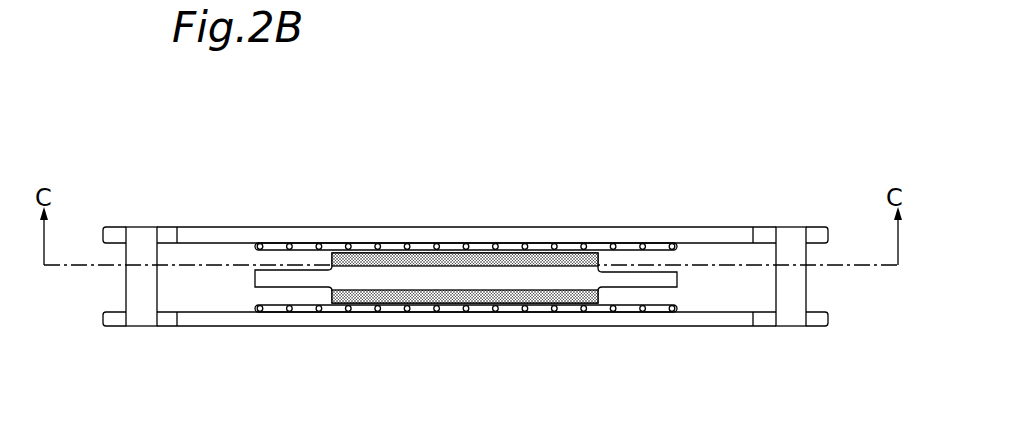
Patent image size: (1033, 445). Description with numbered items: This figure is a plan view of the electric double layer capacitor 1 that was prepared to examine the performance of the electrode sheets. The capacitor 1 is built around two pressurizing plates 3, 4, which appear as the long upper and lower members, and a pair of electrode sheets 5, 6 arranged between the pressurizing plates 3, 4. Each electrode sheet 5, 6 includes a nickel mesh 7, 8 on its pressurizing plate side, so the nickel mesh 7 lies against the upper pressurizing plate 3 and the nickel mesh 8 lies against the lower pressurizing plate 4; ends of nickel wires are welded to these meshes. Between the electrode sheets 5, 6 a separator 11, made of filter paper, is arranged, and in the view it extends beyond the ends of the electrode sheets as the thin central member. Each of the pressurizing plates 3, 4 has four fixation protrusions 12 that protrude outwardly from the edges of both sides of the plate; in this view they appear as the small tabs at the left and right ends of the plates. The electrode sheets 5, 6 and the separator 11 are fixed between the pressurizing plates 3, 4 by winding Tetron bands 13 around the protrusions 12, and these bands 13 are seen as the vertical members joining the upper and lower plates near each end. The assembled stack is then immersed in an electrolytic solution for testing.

The electric double layer capacitor 1 is at (748, 194).
The pressurizing plate 3 is at (233, 234).
The pressurizing plate 4 is at (240, 320).
The electrode sheet 5 is at (443, 256).
The electrode sheet 6 is at (457, 300).
The nickel mesh 7 is at (331, 246).
The nickel mesh 8 is at (337, 311).
The separator 11 is at (630, 282).
The fixation protrusion 12 is at (115, 233).
The Tetron band 13 is at (132, 280).